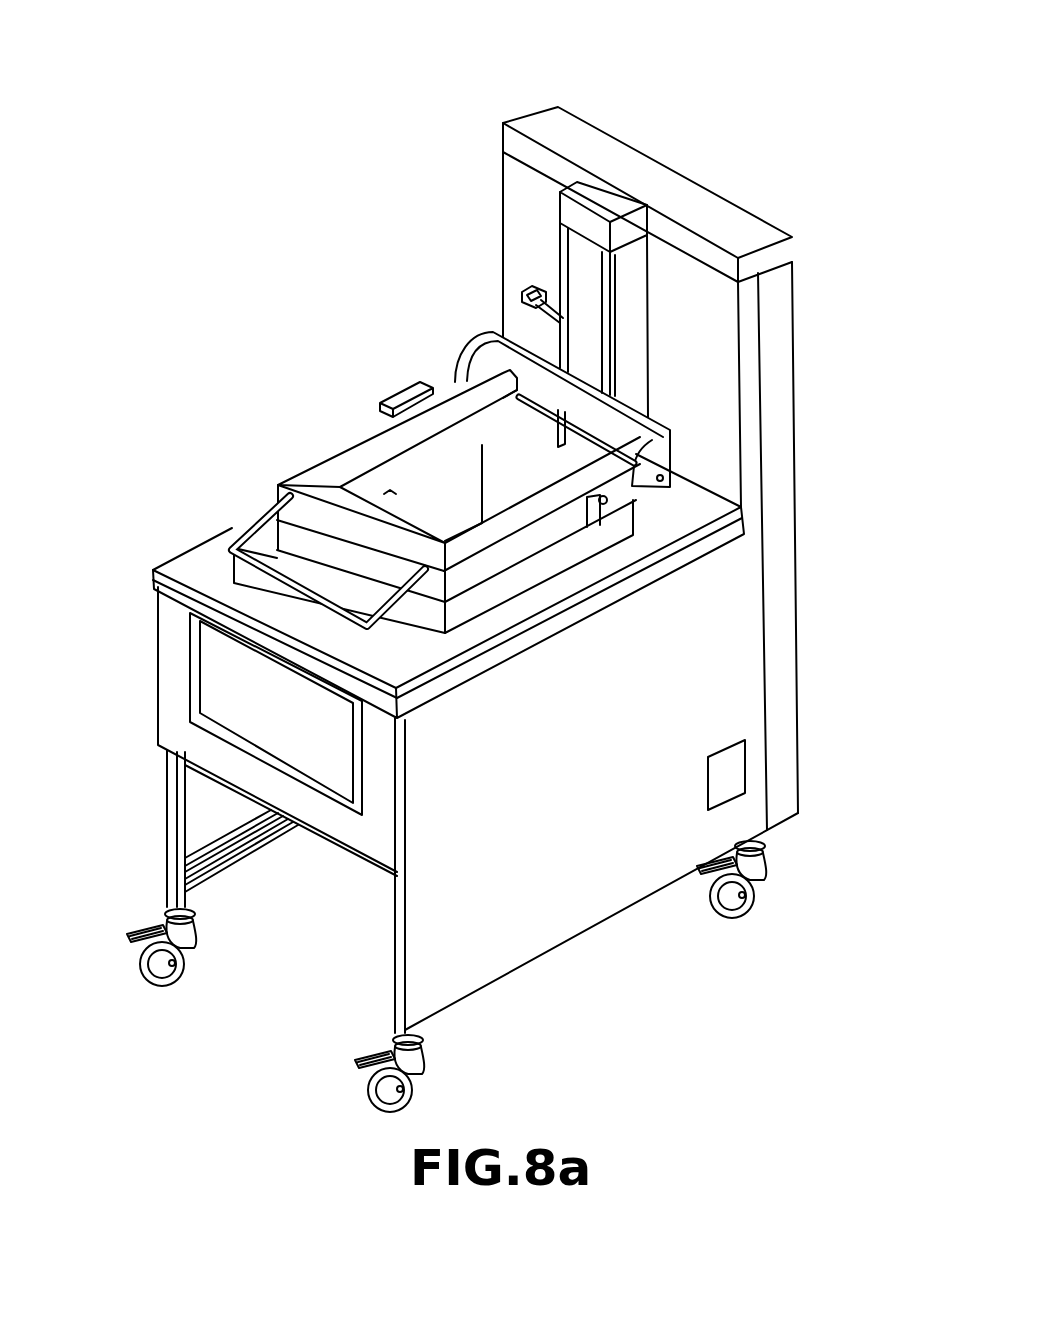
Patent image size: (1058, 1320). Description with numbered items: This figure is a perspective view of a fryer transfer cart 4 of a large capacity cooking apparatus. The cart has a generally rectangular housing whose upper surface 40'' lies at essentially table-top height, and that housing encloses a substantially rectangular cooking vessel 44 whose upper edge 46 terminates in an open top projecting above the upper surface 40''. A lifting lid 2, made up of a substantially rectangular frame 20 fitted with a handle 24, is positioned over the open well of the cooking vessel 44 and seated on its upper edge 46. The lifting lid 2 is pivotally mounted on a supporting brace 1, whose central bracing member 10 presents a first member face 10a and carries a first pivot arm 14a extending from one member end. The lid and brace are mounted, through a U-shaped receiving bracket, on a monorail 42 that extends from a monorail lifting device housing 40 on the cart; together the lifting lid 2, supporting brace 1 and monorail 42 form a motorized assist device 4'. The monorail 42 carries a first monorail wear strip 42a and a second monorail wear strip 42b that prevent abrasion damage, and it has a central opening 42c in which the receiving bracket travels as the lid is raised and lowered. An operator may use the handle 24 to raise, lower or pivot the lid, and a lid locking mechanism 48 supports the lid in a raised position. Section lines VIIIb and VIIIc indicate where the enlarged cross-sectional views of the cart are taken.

The supporting brace 1 is at (457, 344).
The lifting lid 2 is at (290, 445).
The fryer transfer cart 4 is at (505, 849).
The motorized assist device 4' is at (420, 378).
The central bracing member 10 is at (668, 402).
The first member face 10a is at (580, 395).
The first pivot arm 14a is at (633, 515).
The frame 20 is at (360, 428).
The handle 24 is at (262, 514).
The monorail lifting device housing 40 is at (646, 646).
The upper surface 40'' is at (431, 586).
The monorail 42 is at (640, 268).
The first monorail wear strip 42a is at (637, 268).
The second monorail wear strip 42b is at (583, 248).
The central opening 42c is at (580, 248).
The cooking vessel 44 is at (460, 526).
The upper edge 46 is at (540, 563).
The lid locking mechanism 48 is at (537, 290).
The section line VIIIb— VIIIb is at (477, 330).
The section line VIIIc is at (793, 299).